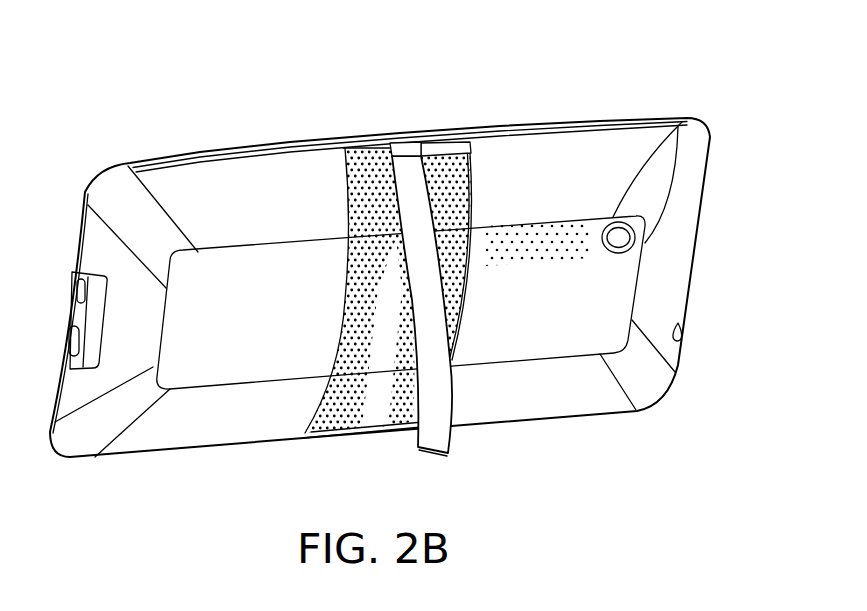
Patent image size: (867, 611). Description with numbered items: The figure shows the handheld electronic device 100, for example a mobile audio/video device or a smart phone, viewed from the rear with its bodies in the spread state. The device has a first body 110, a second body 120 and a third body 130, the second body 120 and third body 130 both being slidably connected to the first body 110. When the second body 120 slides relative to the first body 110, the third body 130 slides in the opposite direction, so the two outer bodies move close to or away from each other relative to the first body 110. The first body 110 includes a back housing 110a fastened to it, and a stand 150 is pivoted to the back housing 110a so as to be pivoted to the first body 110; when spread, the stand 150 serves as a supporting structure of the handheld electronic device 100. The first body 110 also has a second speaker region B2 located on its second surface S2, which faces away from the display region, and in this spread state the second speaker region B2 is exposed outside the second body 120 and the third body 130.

The handheld electronic device 100 is at (549, 60).
The first body 110 is at (218, 152).
The back housing 110a is at (360, 157).
The second body 120 is at (657, 133).
The third body 130 is at (117, 190).
The stand 150 is at (437, 440).
The second speaker region B2 is at (455, 165).
The second surface S2 is at (378, 384).